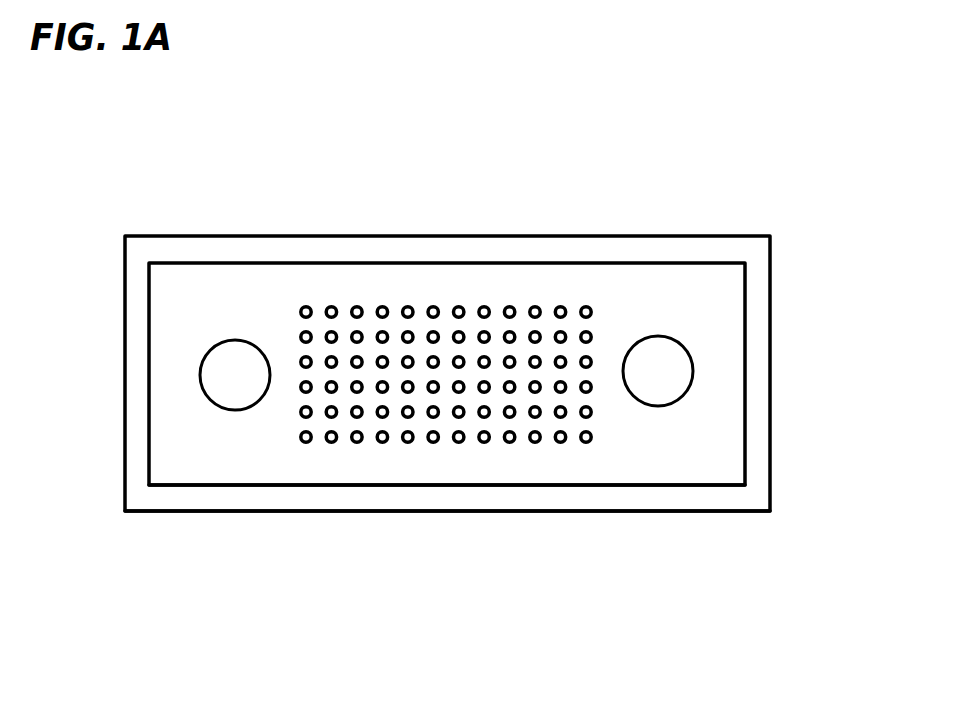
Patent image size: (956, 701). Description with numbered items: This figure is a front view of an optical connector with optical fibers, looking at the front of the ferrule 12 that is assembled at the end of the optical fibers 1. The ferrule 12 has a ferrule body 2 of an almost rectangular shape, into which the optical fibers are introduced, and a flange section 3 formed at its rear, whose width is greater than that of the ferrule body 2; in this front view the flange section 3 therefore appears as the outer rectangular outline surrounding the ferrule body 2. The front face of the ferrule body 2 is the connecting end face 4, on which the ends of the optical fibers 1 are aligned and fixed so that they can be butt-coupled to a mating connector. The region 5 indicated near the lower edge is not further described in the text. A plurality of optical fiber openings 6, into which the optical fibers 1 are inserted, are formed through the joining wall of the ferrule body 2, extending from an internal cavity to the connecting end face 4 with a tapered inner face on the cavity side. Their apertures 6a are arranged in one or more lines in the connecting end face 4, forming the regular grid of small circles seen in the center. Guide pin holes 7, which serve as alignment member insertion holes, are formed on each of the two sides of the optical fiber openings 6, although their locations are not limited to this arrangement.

The ferrule 12 is at (799, 252).
The optical fibers 1 is at (446, 380).
The ferrule body 2 is at (746, 427).
The flange section 3 is at (771, 465).
The connecting end face 4 is at (700, 473).
The inner edge of frame 5 is at (612, 473).
The optical fiber openings 6 is at (357, 307).
The apertures 6a is at (373, 218).
The guide pin holes 7 is at (235, 400).